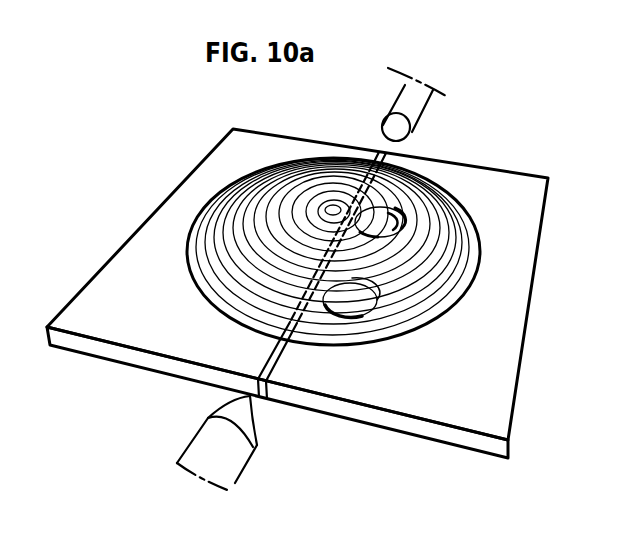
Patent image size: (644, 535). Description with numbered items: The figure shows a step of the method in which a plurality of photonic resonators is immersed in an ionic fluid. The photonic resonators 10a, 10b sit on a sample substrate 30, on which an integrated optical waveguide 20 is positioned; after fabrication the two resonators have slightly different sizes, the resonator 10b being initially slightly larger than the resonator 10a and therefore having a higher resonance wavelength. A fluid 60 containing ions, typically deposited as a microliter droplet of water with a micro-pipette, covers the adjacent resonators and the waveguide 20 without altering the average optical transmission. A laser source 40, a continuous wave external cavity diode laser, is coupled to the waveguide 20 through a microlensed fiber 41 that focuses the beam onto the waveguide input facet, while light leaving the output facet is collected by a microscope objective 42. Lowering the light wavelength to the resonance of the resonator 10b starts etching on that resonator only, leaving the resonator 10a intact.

The sample substrate 30 is at (474, 238).
The fluid 60 is at (247, 222).
The integrated optical waveguide 20 is at (354, 204).
The microscope objective 42 is at (402, 84).
The photonic resonator 10b is at (385, 228).
The photonic resonator 10a is at (350, 302).
The laser source 40 is at (207, 444).
The microlensed fiber 41 is at (253, 410).